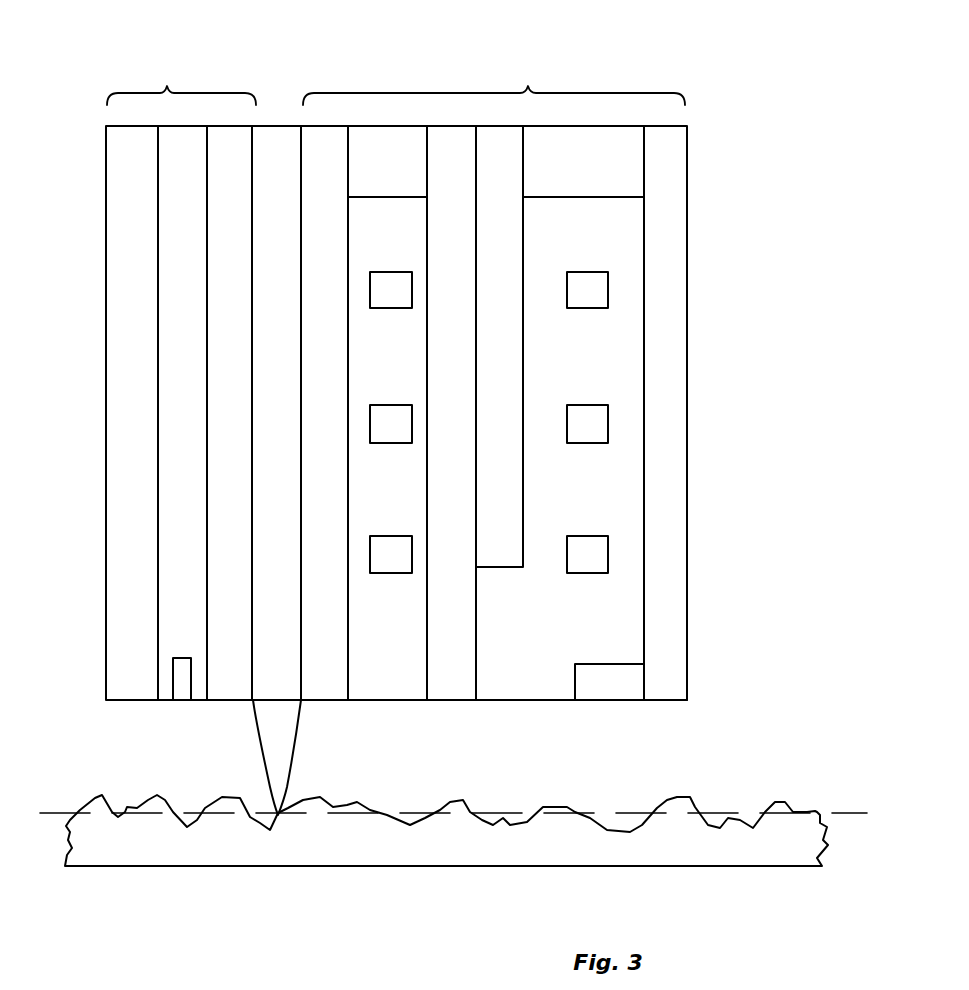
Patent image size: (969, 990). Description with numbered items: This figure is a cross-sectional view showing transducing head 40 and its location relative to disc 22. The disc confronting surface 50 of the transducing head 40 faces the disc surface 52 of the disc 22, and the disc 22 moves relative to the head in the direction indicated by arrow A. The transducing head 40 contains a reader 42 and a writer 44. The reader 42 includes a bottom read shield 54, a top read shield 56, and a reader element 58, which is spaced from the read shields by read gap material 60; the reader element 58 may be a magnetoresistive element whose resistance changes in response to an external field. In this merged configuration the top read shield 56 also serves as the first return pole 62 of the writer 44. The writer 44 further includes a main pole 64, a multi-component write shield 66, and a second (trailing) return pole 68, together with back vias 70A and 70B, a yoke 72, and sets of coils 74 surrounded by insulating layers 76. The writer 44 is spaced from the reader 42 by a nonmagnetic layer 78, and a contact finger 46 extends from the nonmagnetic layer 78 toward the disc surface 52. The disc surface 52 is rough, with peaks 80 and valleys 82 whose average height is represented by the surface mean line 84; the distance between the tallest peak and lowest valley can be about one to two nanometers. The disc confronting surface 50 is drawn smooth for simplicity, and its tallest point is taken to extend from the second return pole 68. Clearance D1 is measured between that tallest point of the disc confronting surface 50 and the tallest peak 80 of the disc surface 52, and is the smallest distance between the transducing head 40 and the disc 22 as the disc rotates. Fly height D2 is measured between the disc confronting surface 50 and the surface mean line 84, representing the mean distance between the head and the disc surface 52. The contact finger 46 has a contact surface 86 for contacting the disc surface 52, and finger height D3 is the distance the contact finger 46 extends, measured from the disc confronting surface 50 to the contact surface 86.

The disc 22 is at (99, 857).
The transducing head 40 is at (106, 126).
The reader 42 is at (181, 80).
The writer 44 is at (494, 80).
The contact finger 46 is at (290, 736).
The disc confronting surface 50 is at (495, 702).
The disc surface 52 is at (151, 799).
The bottom read shield 54 is at (119, 427).
The top read shield 56 is at (216, 427).
The reader element 58 is at (179, 687).
The read gap material 60 is at (171, 464).
The first return pole 62 is at (312, 427).
The main pole 64 is at (436, 466).
The multi-component write shield 66 is at (616, 689).
The second return pole 68 is at (649, 448).
The back via 70A is at (368, 175).
The back via 70B is at (562, 175).
The yoke 72 is at (486, 431).
The coils 74 is at (378, 302).
The insulating layers 76 is at (376, 656).
The nonmagnetic layer 78 is at (262, 464).
The peaks 80 is at (691, 795).
The valleys 82 is at (754, 826).
The surface mean line 84 is at (57, 813).
The contact surface 86 is at (276, 816).
The clearance D1 is at (676, 702).
The fly height D2 is at (606, 702).
The finger height D3 is at (278, 702).
The arrow A is at (846, 888).